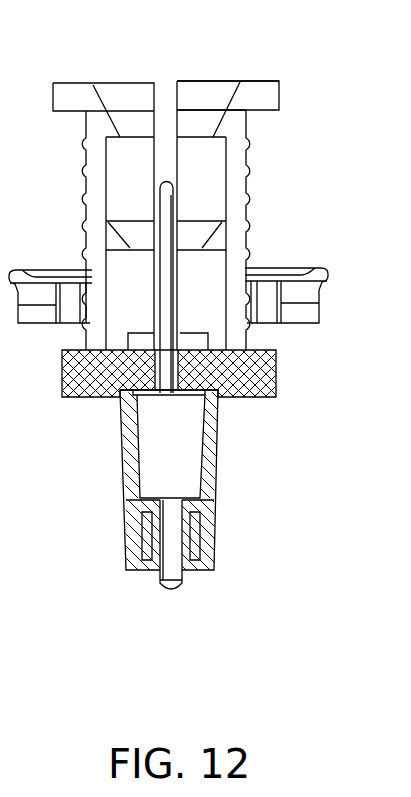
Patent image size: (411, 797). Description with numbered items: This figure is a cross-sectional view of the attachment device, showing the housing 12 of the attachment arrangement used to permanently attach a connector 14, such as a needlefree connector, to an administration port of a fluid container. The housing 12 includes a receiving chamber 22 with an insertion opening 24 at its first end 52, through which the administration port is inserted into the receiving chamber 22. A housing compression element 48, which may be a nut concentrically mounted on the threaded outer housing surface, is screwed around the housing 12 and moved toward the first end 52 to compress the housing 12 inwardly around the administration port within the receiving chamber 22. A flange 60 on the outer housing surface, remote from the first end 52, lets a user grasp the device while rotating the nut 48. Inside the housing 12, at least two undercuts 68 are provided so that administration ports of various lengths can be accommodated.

The housing 12 is at (88, 186).
The connector 14 is at (219, 455).
The receiving chamber 22 is at (262, 90).
The insertion opening 24 is at (202, 81).
The housing compression element 48 is at (327, 272).
The first end 52 is at (279, 80).
The flange 60 is at (278, 367).
The undercuts 68 is at (121, 110).